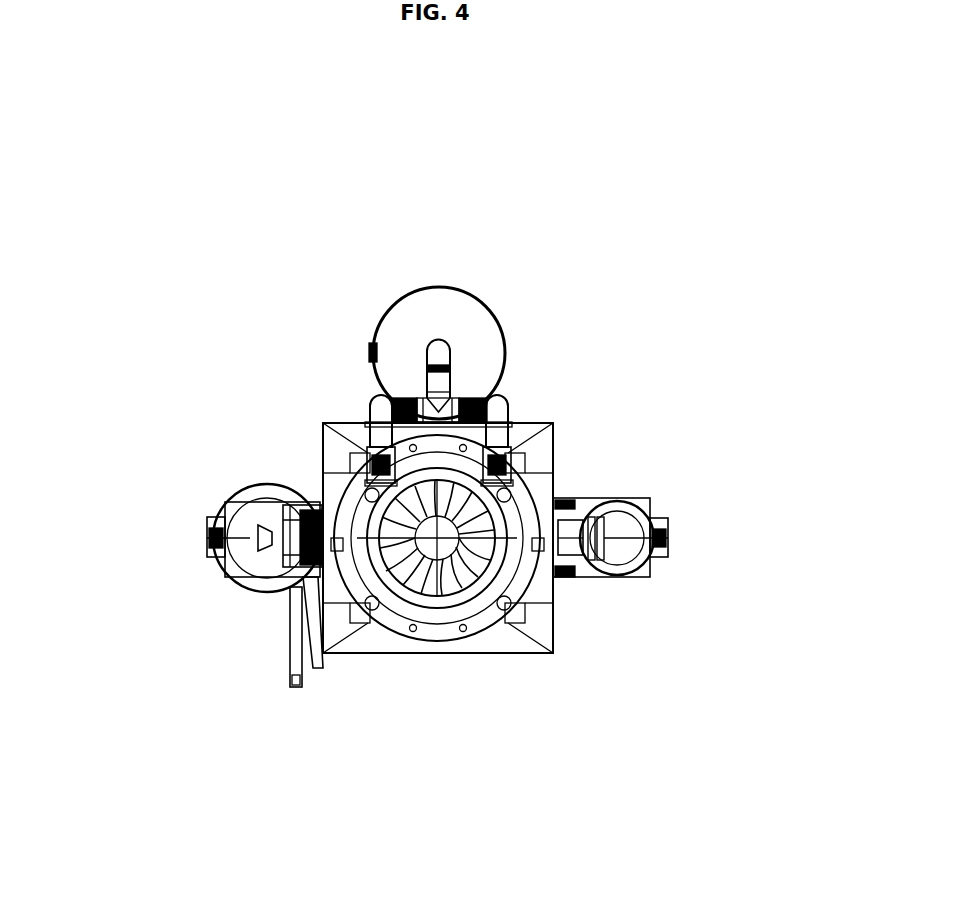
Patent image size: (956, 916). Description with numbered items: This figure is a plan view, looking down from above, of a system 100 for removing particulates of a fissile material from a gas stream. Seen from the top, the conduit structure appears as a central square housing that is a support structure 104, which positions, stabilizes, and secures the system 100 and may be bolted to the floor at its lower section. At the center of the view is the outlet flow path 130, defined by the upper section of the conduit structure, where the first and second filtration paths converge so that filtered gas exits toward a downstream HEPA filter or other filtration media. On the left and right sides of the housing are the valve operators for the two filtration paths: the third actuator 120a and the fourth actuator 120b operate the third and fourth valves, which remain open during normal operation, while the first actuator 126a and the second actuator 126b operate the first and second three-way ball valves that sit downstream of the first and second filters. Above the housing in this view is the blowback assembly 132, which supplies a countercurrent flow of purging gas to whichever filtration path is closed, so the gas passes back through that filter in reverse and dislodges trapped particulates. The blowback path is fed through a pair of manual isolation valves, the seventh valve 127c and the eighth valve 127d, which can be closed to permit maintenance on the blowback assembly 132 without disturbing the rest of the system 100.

The system 100 is at (413, 157).
The support structure 104 is at (502, 640).
The third actuator 120a is at (225, 512).
The fourth actuator 120b is at (652, 567).
The first actuator 126a is at (230, 583).
The second actuator 126b is at (623, 498).
The seventh valve 127c is at (366, 435).
The eighth valve 127d is at (508, 432).
The outlet flow path 130 is at (445, 545).
The blowback assembly 132 is at (510, 304).